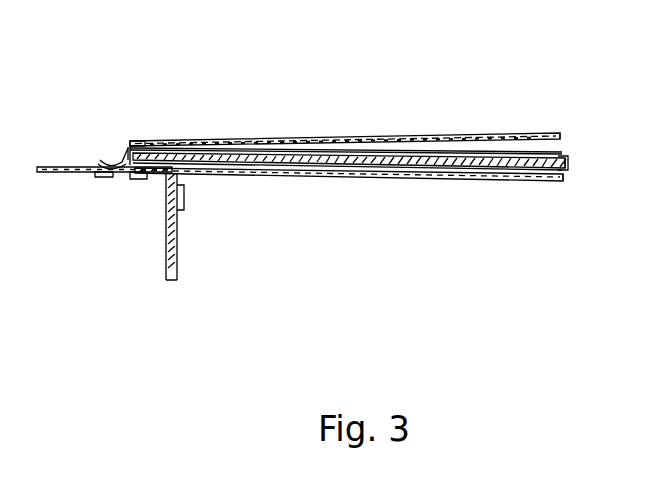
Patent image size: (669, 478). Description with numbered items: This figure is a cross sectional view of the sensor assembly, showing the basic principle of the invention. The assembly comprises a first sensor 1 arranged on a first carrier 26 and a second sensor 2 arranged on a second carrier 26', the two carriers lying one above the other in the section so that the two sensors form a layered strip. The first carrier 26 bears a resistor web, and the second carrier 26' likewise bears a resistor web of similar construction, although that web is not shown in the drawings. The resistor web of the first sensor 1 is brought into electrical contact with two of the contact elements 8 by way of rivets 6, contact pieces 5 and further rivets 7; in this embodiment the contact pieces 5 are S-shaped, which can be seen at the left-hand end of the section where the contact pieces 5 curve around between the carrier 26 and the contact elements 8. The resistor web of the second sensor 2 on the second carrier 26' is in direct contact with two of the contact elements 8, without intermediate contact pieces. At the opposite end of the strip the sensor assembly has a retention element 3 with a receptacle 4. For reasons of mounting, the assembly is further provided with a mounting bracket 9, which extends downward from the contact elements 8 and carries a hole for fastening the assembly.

The first sensor 1 is at (310, 127).
The second sensor 2 is at (289, 191).
The retention element 3 is at (568, 158).
The receptacle 4 is at (458, 178).
The contact piece 5 is at (123, 156).
The rivet 6 is at (141, 142).
The rivet 7 is at (100, 160).
The contact element 8 is at (66, 168).
The mounting bracket 9 is at (176, 281).
The first carrier 26 is at (345, 114).
The second carrier 26' is at (350, 209).